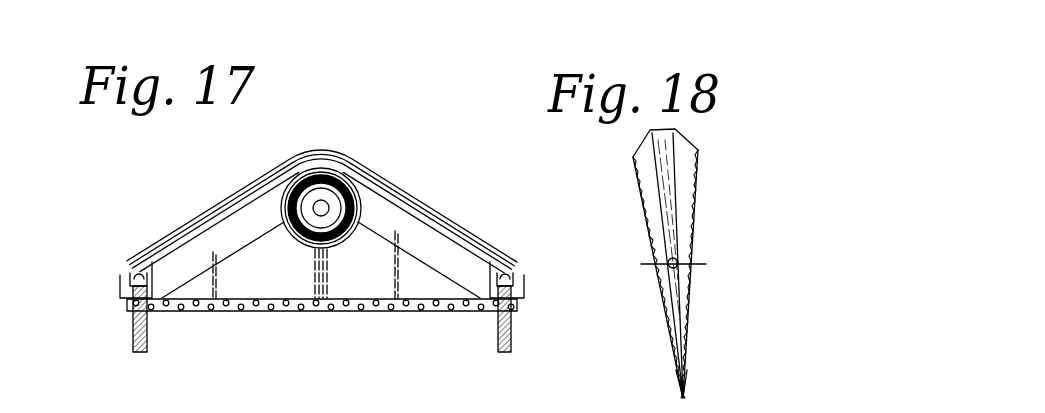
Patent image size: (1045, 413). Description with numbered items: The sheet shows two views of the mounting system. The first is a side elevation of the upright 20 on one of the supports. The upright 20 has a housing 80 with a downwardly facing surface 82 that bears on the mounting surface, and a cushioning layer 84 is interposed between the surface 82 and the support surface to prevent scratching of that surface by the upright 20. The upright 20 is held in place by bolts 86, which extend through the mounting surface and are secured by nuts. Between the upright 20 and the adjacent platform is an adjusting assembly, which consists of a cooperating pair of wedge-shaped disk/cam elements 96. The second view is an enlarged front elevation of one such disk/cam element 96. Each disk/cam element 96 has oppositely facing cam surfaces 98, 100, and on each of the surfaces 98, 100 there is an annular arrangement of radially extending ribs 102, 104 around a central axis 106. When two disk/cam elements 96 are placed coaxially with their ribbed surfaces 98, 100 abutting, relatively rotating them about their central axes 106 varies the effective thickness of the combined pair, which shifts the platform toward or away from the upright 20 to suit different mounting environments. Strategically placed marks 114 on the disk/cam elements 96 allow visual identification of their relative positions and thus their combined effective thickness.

In FIG. 17, the upright 20 is at (322, 186).
In FIG. 17, the housing 80 is at (322, 229).
In FIG. 17, the disk/cam element 96 is at (300, 270).
In FIG. 18, the disk/cam element 96 is at (701, 259).
In FIG. 17, the downwardly facing surface 82 is at (322, 341).
In FIG. 17, the cushioning layer 84 is at (323, 347).
In FIG. 17, the bolts 86 is at (324, 329).
In FIG. 18, the radially extending ribs 104 is at (627, 277).
In FIG. 18, the radially extending ribs 102 is at (728, 274).
In FIG. 18, the cam surface 100 is at (714, 264).
In FIG. 18, the marks 114 is at (635, 283).
In FIG. 18, the central axis 106 is at (703, 281).
In FIG. 18, the cam surface 98 is at (653, 380).